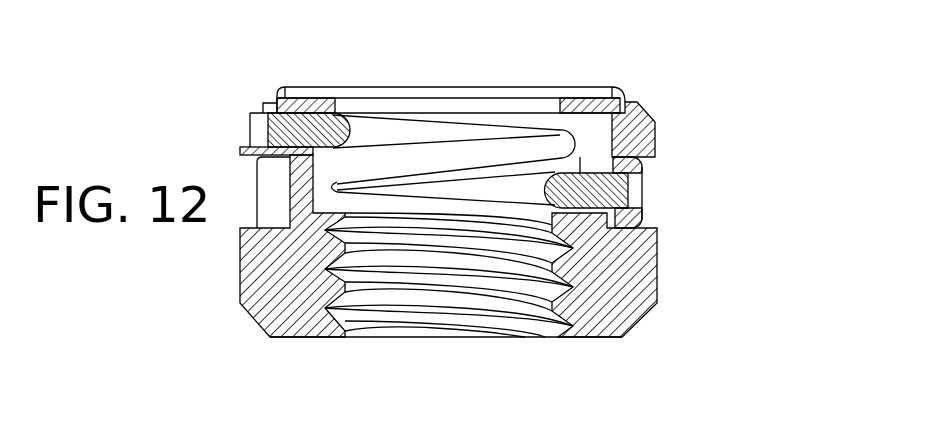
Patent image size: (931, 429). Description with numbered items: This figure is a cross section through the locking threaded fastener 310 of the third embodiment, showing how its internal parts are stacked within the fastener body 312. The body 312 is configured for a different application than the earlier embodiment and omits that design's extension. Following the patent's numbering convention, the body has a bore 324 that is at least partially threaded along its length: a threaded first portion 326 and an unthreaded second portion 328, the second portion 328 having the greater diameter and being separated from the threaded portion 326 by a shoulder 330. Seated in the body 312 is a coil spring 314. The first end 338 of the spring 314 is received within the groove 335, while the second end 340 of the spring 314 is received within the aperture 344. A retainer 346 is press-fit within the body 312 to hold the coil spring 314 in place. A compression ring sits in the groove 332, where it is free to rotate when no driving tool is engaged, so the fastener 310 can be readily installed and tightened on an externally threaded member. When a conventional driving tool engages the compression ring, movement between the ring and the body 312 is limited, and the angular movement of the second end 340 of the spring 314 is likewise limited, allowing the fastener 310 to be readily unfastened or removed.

The locking threaded fastener 310 is at (703, 78).
The fastener body 312 is at (658, 248).
The coil spring 314 is at (427, 129).
The bore 324 is at (400, 338).
The threaded first portion 326 is at (470, 300).
The unthreaded second portion 328 is at (320, 195).
The shoulder 330 is at (337, 190).
The groove 332 is at (250, 202).
The groove 335 is at (250, 133).
The first end of spring 338 is at (250, 117).
The second end of spring 340 is at (642, 170).
The aperture 344 is at (642, 200).
The retainer 346 is at (577, 92).